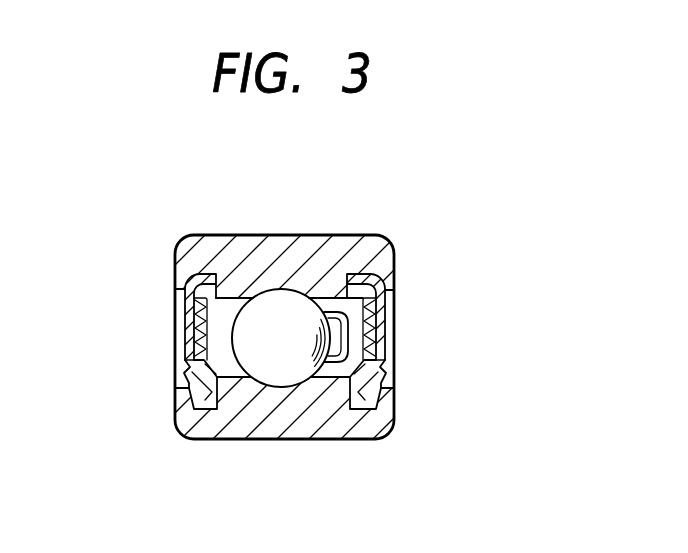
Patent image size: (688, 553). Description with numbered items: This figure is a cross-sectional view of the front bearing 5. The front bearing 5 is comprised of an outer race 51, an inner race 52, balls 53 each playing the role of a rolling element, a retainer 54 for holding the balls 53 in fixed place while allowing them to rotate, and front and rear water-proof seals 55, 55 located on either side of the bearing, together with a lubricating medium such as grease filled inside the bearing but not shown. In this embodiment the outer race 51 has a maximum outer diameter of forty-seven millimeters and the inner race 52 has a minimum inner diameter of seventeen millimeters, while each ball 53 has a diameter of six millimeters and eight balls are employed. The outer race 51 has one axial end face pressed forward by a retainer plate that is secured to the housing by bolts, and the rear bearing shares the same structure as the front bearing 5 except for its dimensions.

The front bearing 5 is at (416, 226).
The outer race 51 is at (212, 250).
The inner race 52 is at (272, 427).
The ball 53 is at (287, 310).
The retainer 54 is at (333, 312).
The water-proof seal 55 is at (190, 314).